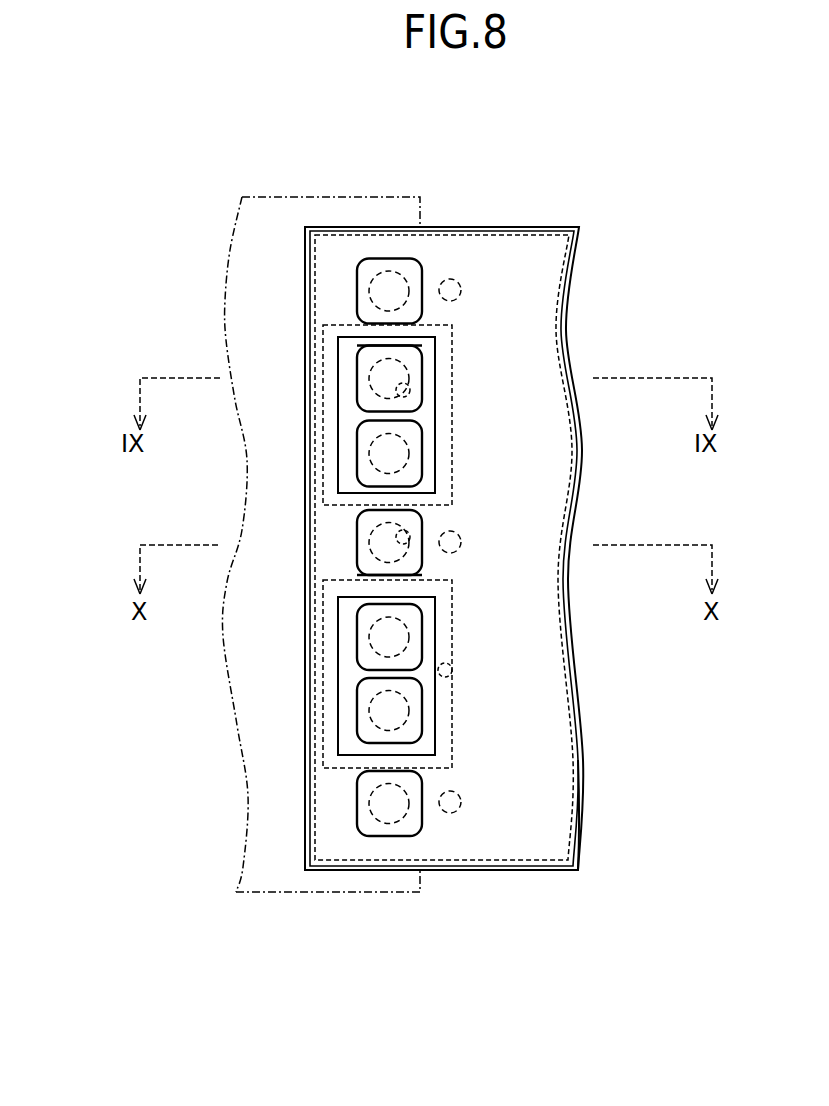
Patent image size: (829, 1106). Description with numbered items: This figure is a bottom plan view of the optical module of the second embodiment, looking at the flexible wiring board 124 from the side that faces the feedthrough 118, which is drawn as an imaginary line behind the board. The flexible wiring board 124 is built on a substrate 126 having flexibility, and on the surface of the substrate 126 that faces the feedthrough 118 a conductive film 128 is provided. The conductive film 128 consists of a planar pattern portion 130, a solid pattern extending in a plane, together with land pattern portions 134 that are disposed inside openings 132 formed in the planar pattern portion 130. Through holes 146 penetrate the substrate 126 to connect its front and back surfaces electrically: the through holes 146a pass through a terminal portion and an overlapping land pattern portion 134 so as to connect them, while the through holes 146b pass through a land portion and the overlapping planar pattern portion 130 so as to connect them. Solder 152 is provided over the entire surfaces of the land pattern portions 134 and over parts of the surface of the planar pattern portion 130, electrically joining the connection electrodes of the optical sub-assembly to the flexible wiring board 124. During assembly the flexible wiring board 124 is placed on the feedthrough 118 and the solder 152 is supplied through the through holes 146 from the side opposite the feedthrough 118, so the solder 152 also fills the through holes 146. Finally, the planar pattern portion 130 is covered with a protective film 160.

The feedthrough 118 is at (290, 197).
The flexible wiring board 124 is at (505, 560).
The substrate 126 is at (357, 870).
The conductive film 128 is at (665, 735).
The planar pattern portion 130 is at (578, 792).
The opening 132 is at (450, 678).
The land pattern portion 134 is at (418, 725).
The through hole 146 is at (560, 413).
The through hole 146a is at (404, 392).
The through hole 146b is at (407, 530).
The solder 152 is at (416, 362).
The protective film 160 is at (535, 866).